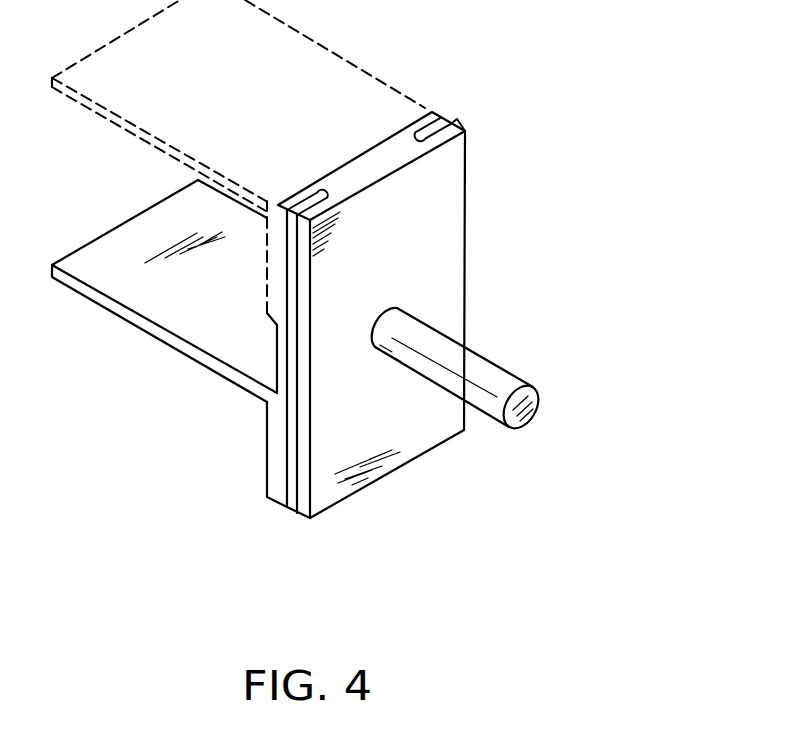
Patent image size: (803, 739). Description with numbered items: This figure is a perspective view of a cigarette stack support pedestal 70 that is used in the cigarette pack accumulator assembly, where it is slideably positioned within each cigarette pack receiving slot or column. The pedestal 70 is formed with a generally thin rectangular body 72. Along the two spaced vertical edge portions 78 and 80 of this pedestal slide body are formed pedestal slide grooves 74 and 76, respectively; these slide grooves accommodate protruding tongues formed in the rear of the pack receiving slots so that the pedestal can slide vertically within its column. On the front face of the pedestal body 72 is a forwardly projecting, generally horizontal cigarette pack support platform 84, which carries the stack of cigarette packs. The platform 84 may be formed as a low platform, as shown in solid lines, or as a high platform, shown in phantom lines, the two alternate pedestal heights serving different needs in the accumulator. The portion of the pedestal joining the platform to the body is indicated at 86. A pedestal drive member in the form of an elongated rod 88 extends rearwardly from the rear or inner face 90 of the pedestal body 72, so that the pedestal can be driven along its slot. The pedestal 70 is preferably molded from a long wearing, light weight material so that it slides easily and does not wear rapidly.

The cigarette stack support pedestal 70 is at (356, 291).
The pedestal body 72 is at (383, 418).
The pedestal slide groove 74 is at (315, 200).
The pedestal slide groove 76 is at (421, 139).
The vertical edge portion 78 is at (302, 496).
The vertical edge portion 80 is at (458, 127).
The cigarette pack support platform 84 is at (120, 252).
The vertical leg 86 is at (277, 362).
The elongated rod 88 is at (492, 363).
The rear or inner face 90 is at (402, 448).